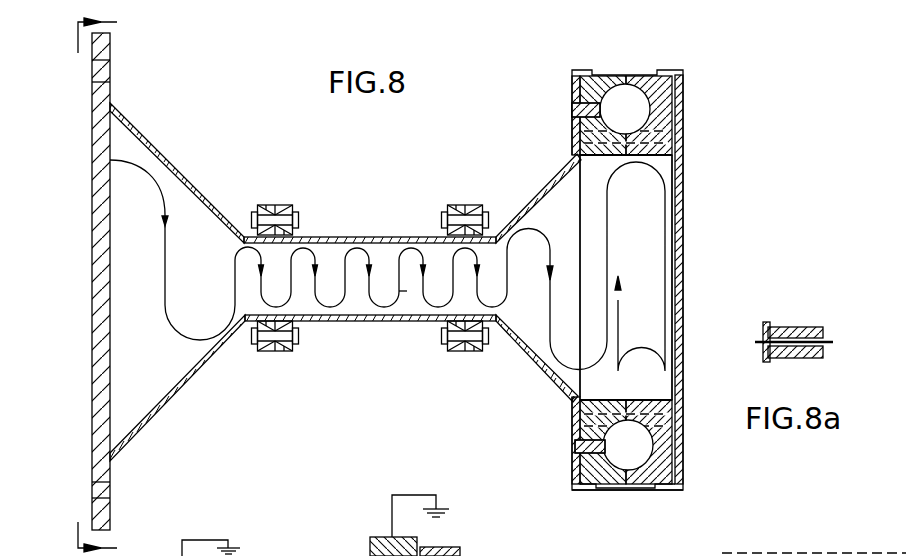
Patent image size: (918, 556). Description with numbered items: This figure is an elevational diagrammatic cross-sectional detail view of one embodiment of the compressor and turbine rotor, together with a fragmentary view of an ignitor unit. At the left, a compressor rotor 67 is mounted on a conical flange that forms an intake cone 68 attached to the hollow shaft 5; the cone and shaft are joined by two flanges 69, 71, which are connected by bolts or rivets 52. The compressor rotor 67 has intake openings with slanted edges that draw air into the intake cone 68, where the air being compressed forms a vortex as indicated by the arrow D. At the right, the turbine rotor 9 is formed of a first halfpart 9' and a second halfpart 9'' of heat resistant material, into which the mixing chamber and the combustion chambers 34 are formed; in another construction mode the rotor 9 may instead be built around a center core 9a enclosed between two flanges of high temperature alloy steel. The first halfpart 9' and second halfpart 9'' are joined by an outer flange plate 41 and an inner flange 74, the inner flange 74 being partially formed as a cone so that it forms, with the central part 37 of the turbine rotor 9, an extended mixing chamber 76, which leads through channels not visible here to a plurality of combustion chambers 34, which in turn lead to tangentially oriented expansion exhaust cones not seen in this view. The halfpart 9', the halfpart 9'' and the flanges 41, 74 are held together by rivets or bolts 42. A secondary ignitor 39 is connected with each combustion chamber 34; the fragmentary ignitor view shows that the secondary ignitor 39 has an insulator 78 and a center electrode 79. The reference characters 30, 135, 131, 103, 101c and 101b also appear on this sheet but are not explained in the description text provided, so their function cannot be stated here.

In FIG. 8, the hollow shaft 5 is at (352, 322).
In FIG. 8, the turbine rotor 9 is at (625, 284).
In FIG. 8, the center core 9a is at (82, 285).
In FIG. 8, the halfpart 9' is at (600, 506).
In FIG. 8, the halfpart 9'' is at (655, 506).
In FIG. 8, the housing wall 30 is at (682, 256).
In FIG. 8, the combustion chamber 34 is at (630, 94).
In FIG. 8, the central part of the turbine rotor 37 is at (604, 235).
In FIG. 8, the secondary ignitor 39 is at (572, 106).
In FIG. 8A, the secondary ignitor 39 is at (798, 327).
In FIG. 8, the outer flange plate 41 is at (682, 209).
In FIG. 8, the bolts 42 is at (683, 134).
In FIG. 8, the bolts or rivets 52 is at (299, 216).
In FIG. 8, the compressor rotor 67 is at (92, 350).
In FIG. 8, the intake cone 68 is at (141, 270).
In FIG. 8, the flange 69 is at (290, 356).
In FIG. 8, the flange 71 is at (457, 355).
In FIG. 8, the inner flange 74 is at (553, 178).
In FIG. 8, the extended mixing chamber 76 is at (579, 301).
In FIG. 8A, the insulator 78 is at (826, 346).
In FIG. 8A, the center electrode 79 is at (830, 338).
In FIG. 8, the arrow D is at (410, 292).
In FIG. 8, the hatched member 135 is at (367, 543).
In FIG. 8, the member 131 is at (464, 547).
In FIG. 8, the member 103 is at (537, 552).
In FIG. 8, the member 101c is at (618, 548).
In FIG. 8, the member 101b is at (780, 547).